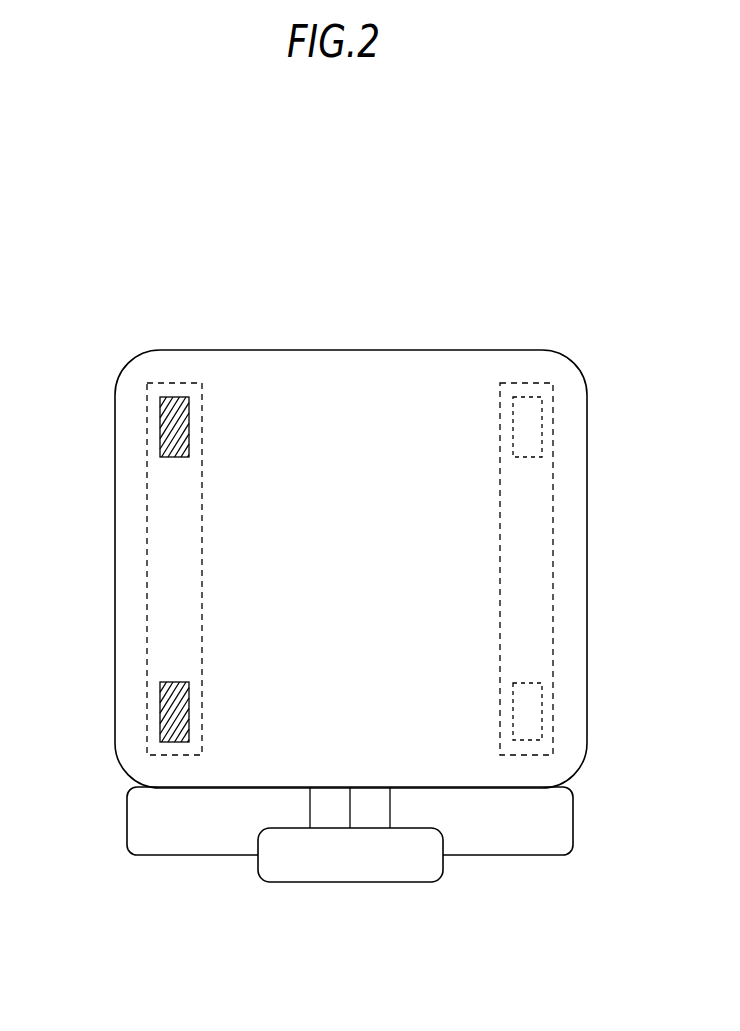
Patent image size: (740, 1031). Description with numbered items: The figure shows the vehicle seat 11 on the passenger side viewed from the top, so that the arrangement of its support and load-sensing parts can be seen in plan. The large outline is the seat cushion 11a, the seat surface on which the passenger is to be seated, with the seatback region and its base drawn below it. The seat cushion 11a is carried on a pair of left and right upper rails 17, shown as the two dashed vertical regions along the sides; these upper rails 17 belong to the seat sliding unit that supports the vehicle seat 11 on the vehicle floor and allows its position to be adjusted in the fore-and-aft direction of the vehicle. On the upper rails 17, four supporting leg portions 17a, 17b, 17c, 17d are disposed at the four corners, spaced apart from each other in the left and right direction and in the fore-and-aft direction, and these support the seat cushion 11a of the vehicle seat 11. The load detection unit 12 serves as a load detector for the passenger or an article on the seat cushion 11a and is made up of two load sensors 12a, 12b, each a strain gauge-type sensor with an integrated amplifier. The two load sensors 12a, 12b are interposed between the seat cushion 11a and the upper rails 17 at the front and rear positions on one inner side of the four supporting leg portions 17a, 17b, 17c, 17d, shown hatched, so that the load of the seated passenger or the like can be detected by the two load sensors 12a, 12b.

The vehicle seat 11 is at (294, 332).
The seat cushion 11a is at (447, 373).
The load detection unit 12 is at (570, 667).
The load sensor 12a is at (172, 438).
The load sensor 12b is at (172, 699).
The upper rails 17 is at (165, 552).
The supporting leg portion 17a is at (148, 406).
The supporting leg portion 17b is at (553, 420).
The supporting leg portion 17c is at (148, 728).
The supporting leg portion 17d is at (553, 718).